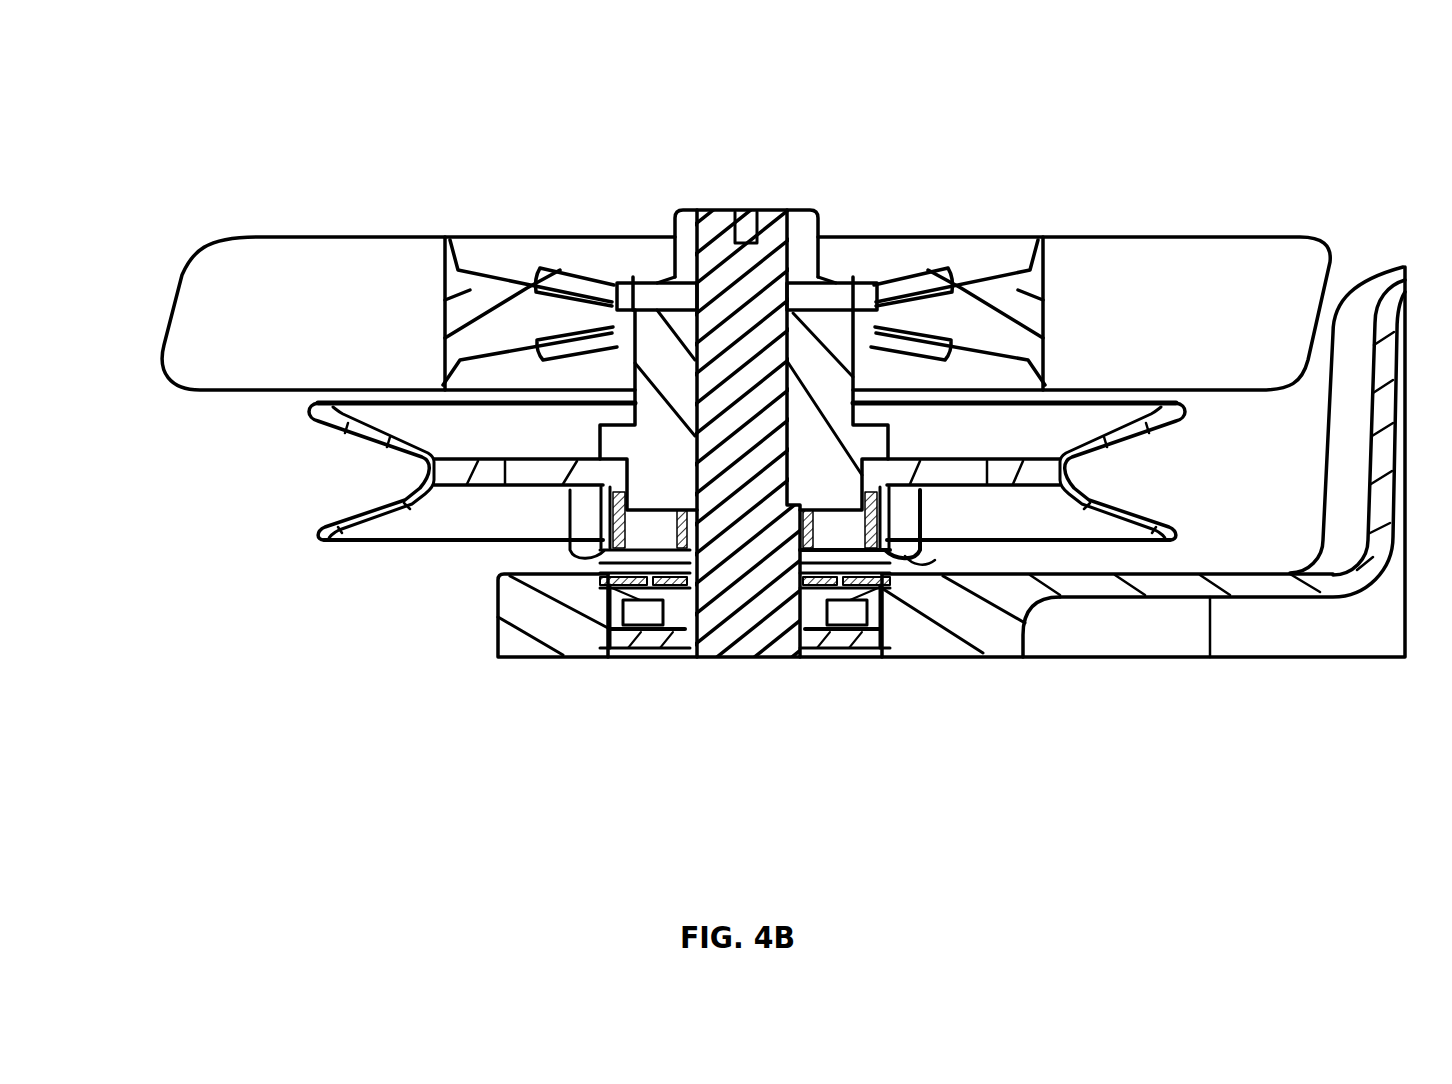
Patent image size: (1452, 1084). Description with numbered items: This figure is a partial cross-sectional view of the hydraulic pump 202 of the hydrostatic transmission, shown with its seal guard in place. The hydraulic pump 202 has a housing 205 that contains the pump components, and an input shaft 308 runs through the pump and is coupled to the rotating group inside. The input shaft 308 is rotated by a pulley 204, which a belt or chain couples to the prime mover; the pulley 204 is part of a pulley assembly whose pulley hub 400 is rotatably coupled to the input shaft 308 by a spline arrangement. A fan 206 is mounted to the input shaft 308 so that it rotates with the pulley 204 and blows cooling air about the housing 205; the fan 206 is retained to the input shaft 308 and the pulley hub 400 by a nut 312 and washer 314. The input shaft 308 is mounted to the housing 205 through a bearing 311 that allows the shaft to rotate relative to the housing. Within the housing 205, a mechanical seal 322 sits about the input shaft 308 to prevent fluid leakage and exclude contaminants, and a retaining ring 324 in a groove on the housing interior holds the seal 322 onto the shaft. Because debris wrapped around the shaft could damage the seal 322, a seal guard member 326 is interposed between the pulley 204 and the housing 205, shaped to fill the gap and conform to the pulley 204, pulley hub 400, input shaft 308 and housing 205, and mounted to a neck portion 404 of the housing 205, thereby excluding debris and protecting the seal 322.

The hydraulic pump 202 is at (292, 124).
The pulley 204 is at (322, 527).
The housing 205 is at (498, 622).
The fan 206 is at (258, 236).
The input shaft 308 is at (767, 240).
The bearing 311 is at (650, 660).
The nut 312 is at (690, 210).
The washer 314 is at (652, 283).
The seal 322 is at (814, 600).
The retaining ring 324 is at (597, 580).
The seal guard member 326 is at (575, 547).
The pulley hub 400 is at (843, 333).
The neck portion 404 is at (912, 564).